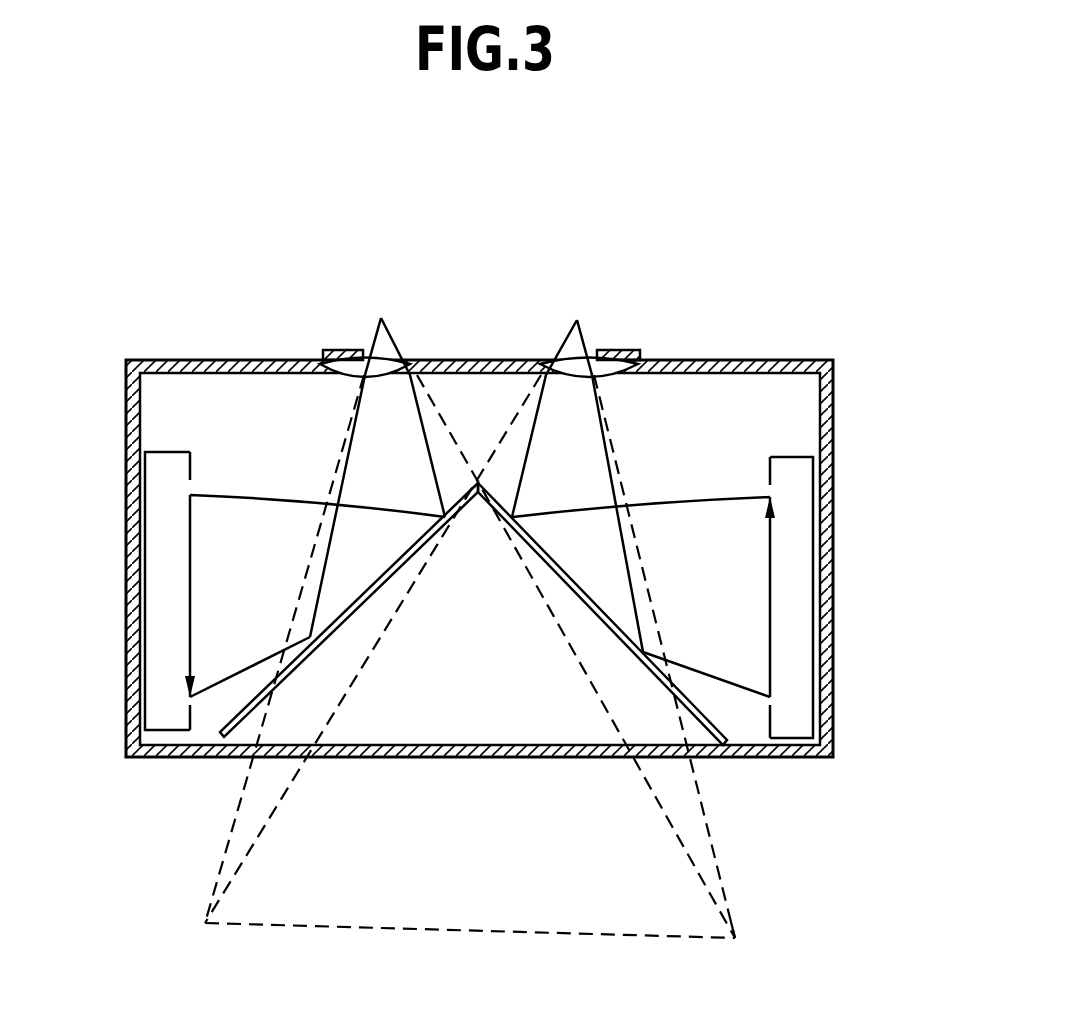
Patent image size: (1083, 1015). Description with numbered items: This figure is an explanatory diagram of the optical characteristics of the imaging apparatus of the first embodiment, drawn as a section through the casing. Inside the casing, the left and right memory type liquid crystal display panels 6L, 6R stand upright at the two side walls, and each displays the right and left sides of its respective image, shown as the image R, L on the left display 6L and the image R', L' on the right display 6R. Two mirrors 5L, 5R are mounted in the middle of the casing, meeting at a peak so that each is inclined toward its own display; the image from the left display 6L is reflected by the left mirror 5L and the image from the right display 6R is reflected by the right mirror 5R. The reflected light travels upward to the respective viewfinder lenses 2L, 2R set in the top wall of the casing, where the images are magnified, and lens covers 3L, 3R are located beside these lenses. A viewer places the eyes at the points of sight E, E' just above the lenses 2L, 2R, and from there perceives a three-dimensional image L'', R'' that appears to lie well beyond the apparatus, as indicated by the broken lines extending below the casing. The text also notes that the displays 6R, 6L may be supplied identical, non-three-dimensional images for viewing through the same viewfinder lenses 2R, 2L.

The viewfinder lens 2L is at (400, 356).
The viewfinder lens 2R is at (584, 356).
The lens cover 3L is at (345, 350).
The lens cover 3R is at (640, 352).
The mirror 5L is at (368, 603).
The mirror 5R is at (606, 630).
The memory type liquid crystal display panel 6L is at (157, 592).
The memory type liquid crystal display panel 6R is at (795, 573).
The point of sight E is at (470, 608).
The point of sight E' is at (470, 608).
The image L is at (315, 572).
The image R is at (250, 682).
The image L' is at (659, 577).
The image R' is at (724, 686).
The three-dimensional image L'' is at (452, 921).
The three-dimensional image R'' is at (757, 931).